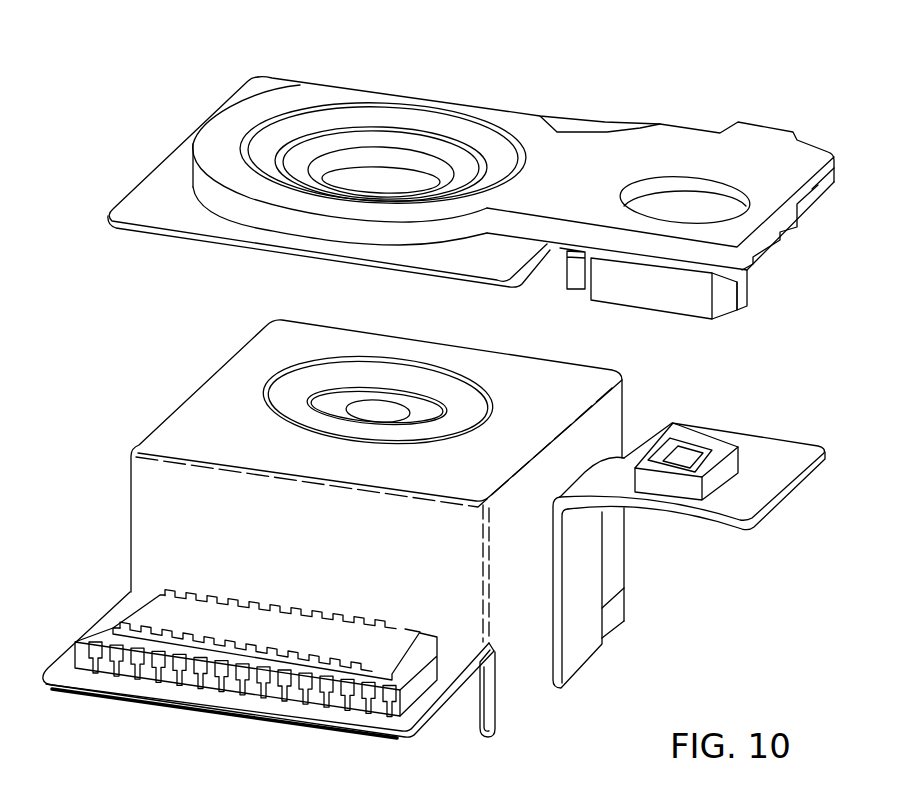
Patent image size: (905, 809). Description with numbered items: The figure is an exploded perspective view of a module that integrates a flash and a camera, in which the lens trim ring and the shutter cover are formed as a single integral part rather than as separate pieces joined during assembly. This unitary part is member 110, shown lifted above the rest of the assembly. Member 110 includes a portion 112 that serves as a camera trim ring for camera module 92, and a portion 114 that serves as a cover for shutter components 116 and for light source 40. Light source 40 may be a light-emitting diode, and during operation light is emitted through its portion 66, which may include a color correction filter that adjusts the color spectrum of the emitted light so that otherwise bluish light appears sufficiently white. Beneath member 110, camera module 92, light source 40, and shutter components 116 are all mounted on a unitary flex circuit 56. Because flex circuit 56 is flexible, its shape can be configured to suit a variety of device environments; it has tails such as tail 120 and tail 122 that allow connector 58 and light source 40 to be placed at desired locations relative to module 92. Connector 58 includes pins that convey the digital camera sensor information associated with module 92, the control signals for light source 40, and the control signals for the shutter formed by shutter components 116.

The member 110 is at (846, 127).
The portion 112 is at (218, 142).
The portion 114 is at (783, 183).
The shutter components 116 is at (757, 270).
The camera module 92 is at (192, 335).
The flex circuit 56 is at (728, 520).
The tail 120 is at (580, 633).
The light source 40 is at (673, 492).
The portion 66 is at (687, 460).
The tail 122 is at (485, 692).
The connector 58 is at (120, 608).